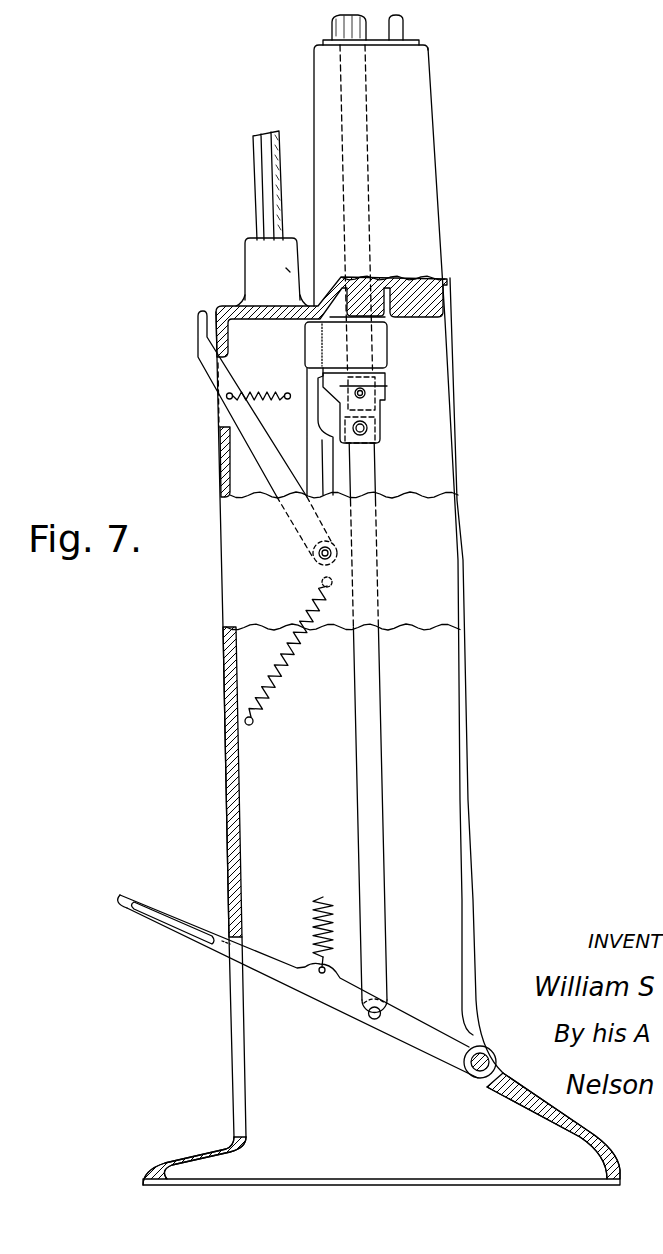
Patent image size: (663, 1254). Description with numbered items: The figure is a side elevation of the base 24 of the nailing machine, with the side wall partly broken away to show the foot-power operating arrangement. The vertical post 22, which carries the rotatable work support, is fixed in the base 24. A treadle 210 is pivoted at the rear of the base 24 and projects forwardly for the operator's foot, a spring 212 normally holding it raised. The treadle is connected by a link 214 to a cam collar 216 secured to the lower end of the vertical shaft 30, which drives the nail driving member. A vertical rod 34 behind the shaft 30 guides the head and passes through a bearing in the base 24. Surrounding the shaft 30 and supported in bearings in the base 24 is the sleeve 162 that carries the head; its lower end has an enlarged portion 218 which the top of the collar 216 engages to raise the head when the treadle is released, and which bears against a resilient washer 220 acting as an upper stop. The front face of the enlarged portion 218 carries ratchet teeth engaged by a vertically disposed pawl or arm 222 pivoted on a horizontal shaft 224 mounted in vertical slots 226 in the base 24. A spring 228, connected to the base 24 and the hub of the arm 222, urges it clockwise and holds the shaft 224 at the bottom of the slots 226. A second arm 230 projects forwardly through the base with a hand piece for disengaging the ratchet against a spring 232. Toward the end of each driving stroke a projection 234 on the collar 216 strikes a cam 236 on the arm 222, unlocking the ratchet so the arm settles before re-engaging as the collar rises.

The vertical post 22 is at (268, 173).
The base 24 is at (223, 683).
The vertical shaft 30 is at (347, 20).
The vertical rod 34 is at (403, 26).
The vertical sleeve 162 is at (373, 296).
The treadle 210 is at (227, 947).
The spring 212 is at (312, 896).
The link 214 is at (370, 747).
The cam collar 216 is at (377, 418).
The enlarged portion 218 is at (378, 340).
The resilient washer 220 is at (380, 317).
The pawl or arm 222 is at (315, 423).
The horizontal shaft 224 is at (320, 562).
The vertical slots 226 is at (319, 550).
The spring 228 is at (284, 663).
The second arm 230 is at (212, 363).
The spring 232 is at (262, 388).
The projection 234 is at (332, 383).
The cam 236 is at (367, 432).